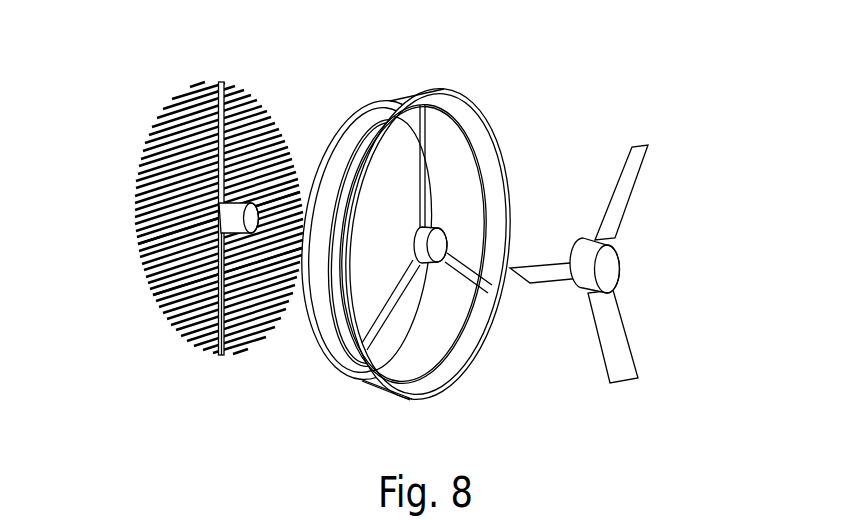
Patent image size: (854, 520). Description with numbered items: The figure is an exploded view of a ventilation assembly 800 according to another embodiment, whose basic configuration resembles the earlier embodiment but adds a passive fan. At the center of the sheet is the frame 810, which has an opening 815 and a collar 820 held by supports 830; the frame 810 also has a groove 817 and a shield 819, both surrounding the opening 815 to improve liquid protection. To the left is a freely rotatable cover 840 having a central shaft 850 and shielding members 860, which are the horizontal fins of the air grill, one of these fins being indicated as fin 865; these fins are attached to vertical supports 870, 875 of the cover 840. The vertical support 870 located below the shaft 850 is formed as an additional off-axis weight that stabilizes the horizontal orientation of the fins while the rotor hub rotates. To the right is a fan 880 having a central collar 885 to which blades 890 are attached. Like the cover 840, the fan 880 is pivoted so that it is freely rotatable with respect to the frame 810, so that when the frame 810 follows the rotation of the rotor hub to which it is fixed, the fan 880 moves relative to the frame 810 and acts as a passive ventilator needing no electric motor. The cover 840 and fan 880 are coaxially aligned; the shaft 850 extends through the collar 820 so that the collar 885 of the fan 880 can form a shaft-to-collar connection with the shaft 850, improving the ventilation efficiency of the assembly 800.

The ventilation assembly 800 is at (438, 55).
The frame 810 is at (497, 143).
The opening 815 is at (432, 313).
The groove 817 is at (351, 406).
The shield 819 is at (378, 103).
The collar 820 is at (445, 228).
The supports 830 is at (378, 320).
The cover 840 is at (136, 117).
The central shaft 850 is at (249, 207).
The shielding members 860 is at (145, 295).
The slat 865 is at (122, 241).
The vertical support 870 is at (223, 352).
The vertical support 875 is at (220, 82).
The fan 880 is at (657, 108).
The central collar 885 is at (618, 270).
The blades 890 is at (635, 183).